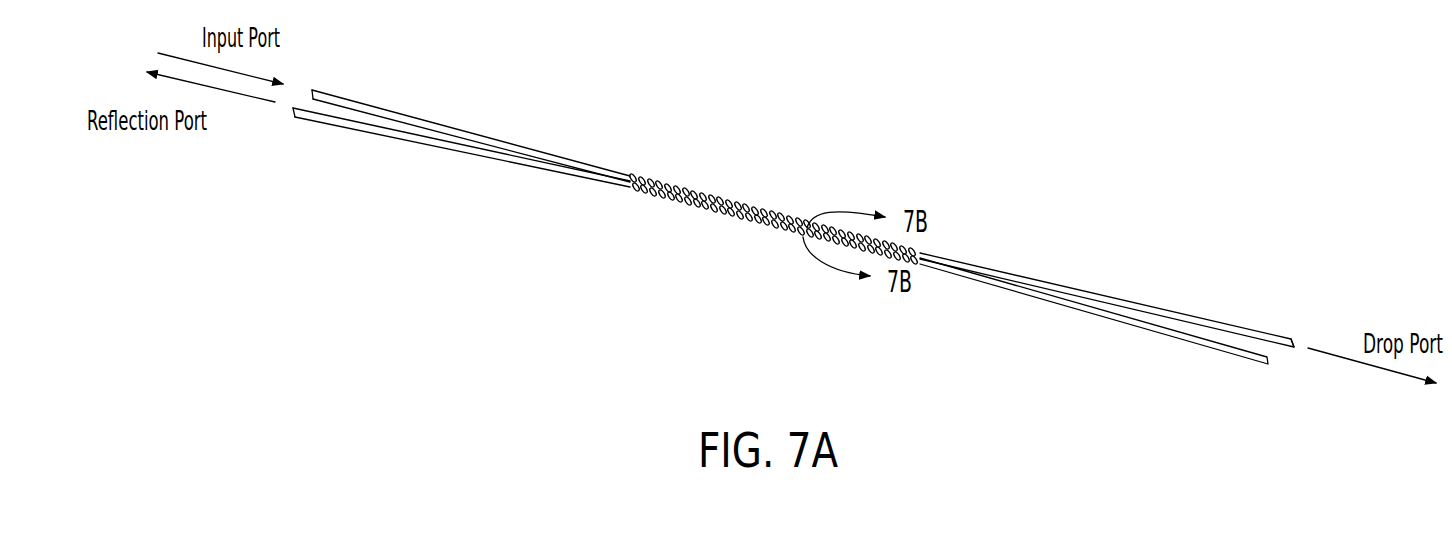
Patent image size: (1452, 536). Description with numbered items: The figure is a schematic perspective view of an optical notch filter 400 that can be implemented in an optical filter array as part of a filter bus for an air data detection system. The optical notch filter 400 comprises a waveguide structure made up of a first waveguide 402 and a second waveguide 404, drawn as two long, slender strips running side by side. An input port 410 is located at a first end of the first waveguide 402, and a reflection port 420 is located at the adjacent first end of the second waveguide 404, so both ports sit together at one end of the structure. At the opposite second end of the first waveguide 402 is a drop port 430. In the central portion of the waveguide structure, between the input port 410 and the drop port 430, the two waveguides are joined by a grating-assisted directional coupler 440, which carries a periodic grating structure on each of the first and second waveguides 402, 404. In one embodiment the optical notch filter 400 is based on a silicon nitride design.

The optical notch filter 400 is at (587, 136).
The first waveguide 402 is at (500, 139).
The second waveguide 404 is at (520, 167).
The input port 410 is at (313, 92).
The reflection port 420 is at (297, 118).
The drop port 430 is at (1280, 348).
The grating-assisted directional coupler 440 is at (787, 223).